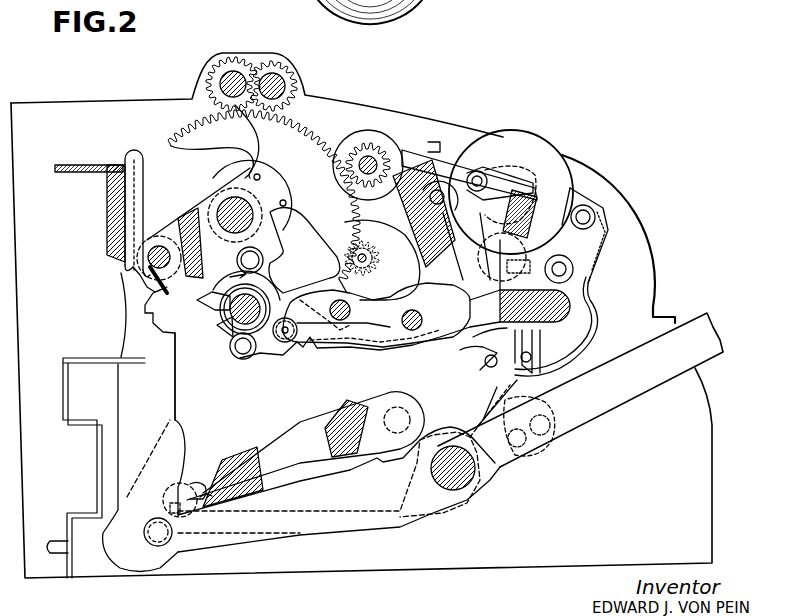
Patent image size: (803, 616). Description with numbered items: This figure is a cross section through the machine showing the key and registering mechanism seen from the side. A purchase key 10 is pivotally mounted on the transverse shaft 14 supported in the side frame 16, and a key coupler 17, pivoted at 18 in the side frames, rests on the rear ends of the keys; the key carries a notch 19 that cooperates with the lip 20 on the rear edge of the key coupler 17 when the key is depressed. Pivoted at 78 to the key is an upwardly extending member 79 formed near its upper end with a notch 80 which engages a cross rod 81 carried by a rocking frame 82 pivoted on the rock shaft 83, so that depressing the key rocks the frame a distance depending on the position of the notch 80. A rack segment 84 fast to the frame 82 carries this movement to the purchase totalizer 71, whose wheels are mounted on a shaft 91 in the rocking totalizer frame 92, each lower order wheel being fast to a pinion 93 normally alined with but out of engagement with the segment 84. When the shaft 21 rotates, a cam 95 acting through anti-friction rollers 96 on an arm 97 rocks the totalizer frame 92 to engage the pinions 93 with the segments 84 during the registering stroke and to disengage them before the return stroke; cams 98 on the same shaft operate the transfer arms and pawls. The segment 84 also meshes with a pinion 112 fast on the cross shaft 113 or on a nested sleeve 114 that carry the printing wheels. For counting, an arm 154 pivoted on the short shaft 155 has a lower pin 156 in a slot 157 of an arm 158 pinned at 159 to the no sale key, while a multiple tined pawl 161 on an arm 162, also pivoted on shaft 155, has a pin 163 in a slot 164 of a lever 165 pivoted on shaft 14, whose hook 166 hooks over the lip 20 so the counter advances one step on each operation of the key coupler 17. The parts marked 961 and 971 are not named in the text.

The amount or purchase key 10 is at (707, 350).
The transverse shaft 14 is at (458, 485).
The side frame 16 is at (628, 232).
The key coupler 17 is at (307, 433).
The pivot 18 is at (403, 403).
The notch 19 is at (194, 488).
The lip 20 is at (218, 462).
The shaft 21 is at (220, 325).
The purchase totalizer 71 is at (366, 135).
The pivot 78 is at (158, 543).
The upwardly extending member 79 is at (165, 400).
The notch 80 is at (140, 290).
The cross rod 81 is at (158, 245).
The rocking frame 82 is at (200, 208).
The rock shaft 83 is at (232, 200).
The rack segment 84 is at (290, 133).
The shaft 91 is at (372, 155).
The rocking totalizer frame 92 is at (427, 167).
The pinion 93 is at (368, 142).
The cam 95 is at (280, 287).
The anti-friction roller 96 is at (263, 247).
The arm 97 is at (372, 333).
The cam 98 is at (197, 307).
The pinion 112 is at (378, 266).
The cross shaft 113 is at (383, 247).
The nested sleeve 114 is at (363, 253).
The arm 154 is at (592, 340).
The short shaft 155 is at (565, 270).
The pin 156 is at (487, 364).
The slot 157 is at (497, 332).
The arm 158 is at (497, 387).
The pin 159 is at (542, 427).
The multiple tined pawl 161 is at (593, 198).
The arm 162 is at (595, 313).
The pin 163 is at (537, 367).
The slot 164 is at (507, 333).
The lever 165 is at (238, 532).
The hook 166 is at (203, 494).
The pawl 961 is at (463, 168).
The link 971 is at (275, 350).